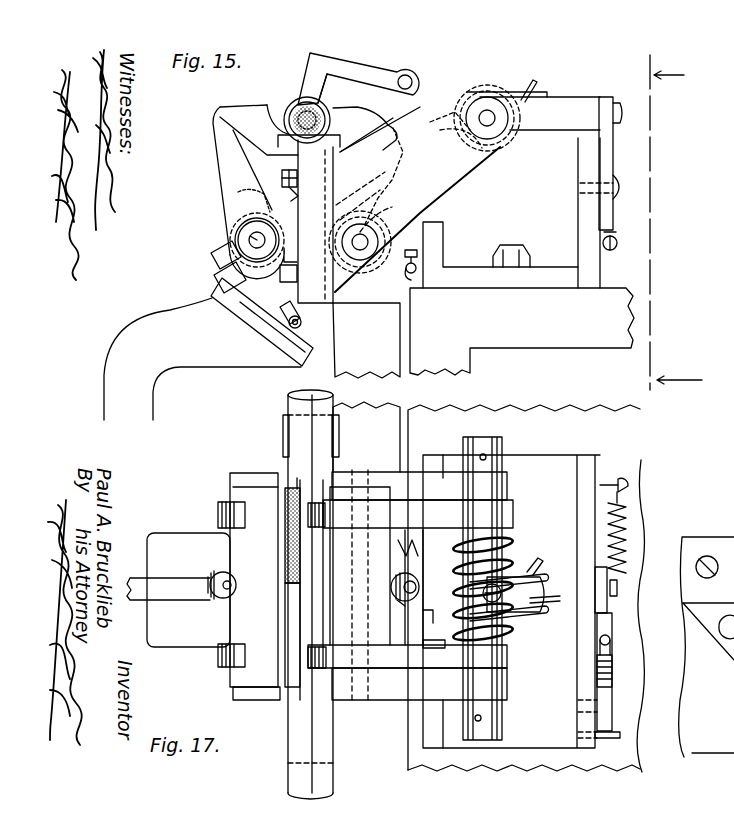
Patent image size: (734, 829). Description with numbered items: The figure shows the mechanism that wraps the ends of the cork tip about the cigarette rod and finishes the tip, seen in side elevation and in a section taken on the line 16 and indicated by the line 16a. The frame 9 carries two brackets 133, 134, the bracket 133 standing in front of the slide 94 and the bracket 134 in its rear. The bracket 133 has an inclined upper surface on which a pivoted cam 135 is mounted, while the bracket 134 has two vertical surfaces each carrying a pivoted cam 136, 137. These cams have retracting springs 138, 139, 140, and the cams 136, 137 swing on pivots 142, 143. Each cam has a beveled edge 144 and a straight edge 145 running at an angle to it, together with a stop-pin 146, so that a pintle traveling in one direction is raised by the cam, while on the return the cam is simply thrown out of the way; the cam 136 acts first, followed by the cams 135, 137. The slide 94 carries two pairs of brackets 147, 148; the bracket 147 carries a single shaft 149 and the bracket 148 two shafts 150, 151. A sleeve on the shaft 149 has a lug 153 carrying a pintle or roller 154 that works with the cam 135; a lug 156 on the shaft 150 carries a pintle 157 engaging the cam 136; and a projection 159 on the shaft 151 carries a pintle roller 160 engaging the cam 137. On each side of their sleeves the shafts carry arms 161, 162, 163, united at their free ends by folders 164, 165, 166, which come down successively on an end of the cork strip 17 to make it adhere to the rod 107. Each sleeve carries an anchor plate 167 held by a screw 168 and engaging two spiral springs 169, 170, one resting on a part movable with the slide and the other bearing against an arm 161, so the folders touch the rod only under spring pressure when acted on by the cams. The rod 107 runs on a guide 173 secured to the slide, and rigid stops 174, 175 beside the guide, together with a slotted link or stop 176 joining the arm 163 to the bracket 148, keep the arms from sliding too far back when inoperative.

In FIG. 15, the frame 9 is at (575, 328).
In FIG. 15, the section line 16— 16 is at (658, 223).
In FIG. 17, the section line 16a is at (410, 514).
In FIG. 17, the cork strip 17 is at (301, 470).
In FIG. 15, the slide 94 is at (366, 340).
In FIG. 17, the slide 94 is at (366, 437).
In FIG. 15, the cigarette rod 107 is at (295, 98).
In FIG. 17, the cigarette rod 107 is at (296, 432).
In FIG. 15, the bracket 133 is at (104, 411).
In FIG. 17, the bracket 133 is at (168, 610).
In FIG. 15, the bracket 134 is at (523, 290).
In FIG. 17, the bracket 134 is at (583, 505).
In FIG. 15, the pivoted cam 135 is at (256, 316).
In FIG. 15, the pivoted cam 136 is at (424, 237).
In FIG. 17, the pivoted cam 136 is at (431, 652).
In FIG. 15, the pivoted cam 137 is at (604, 166).
In FIG. 15, the retracting spring 138 is at (319, 227).
In FIG. 15, the retracting spring 139 is at (395, 285).
In FIG. 15, the retracting spring 140 is at (619, 245).
In FIG. 17, the retracting spring 140 is at (629, 528).
In FIG. 15, the pivot 142 is at (396, 269).
In FIG. 15, the pivot 143 is at (622, 188).
In FIG. 17, the pivot 143 is at (609, 716).
In FIG. 15, the beveled edge 144 is at (279, 296).
In FIG. 17, the beveled edge 144 is at (591, 671).
In FIG. 17, the straight edge 145 is at (432, 650).
In FIG. 17, the stop-pin 146 is at (606, 740).
In FIG. 15, the bracket 147 is at (249, 200).
In FIG. 15, the bracket 148 is at (368, 215).
In FIG. 17, the bracket 148 is at (435, 478).
In FIG. 15, the shaft 149 is at (234, 238).
In FIG. 15, the shaft 150 is at (360, 248).
In FIG. 17, the shaft 150 is at (363, 470).
In FIG. 15, the shaft 151 is at (490, 128).
In FIG. 17, the shaft 151 is at (486, 440).
In FIG. 15, the lug 153 is at (226, 273).
In FIG. 17, the lug 153 is at (231, 585).
In FIG. 15, the pintle or roller 154 is at (214, 288).
In FIG. 17, the pintle or roller 154 is at (213, 580).
In FIG. 17, the lug 156 is at (391, 587).
In FIG. 17, the pintle 157 is at (397, 605).
In FIG. 15, the projection 159 is at (553, 128).
In FIG. 17, the projection 159 is at (556, 605).
In FIG. 15, the pintle roller 160 is at (607, 97).
In FIG. 17, the pintle roller 160 is at (596, 578).
In FIG. 15, the arm 161 is at (228, 184).
In FIG. 17, the arm 161 is at (218, 515).
In FIG. 15, the arm 162 is at (452, 137).
In FIG. 15, the arm 163 is at (384, 70).
In FIG. 17, the arm 163 is at (407, 657).
In FIG. 15, the folder 164 is at (236, 107).
In FIG. 17, the folder 164 is at (255, 586).
In FIG. 15, the folder 165 is at (348, 108).
In FIG. 17, the folder 165 is at (360, 566).
In FIG. 15, the folder 166 is at (318, 88).
In FIG. 17, the folder 166 is at (312, 627).
In FIG. 15, the anchor plate 167 is at (516, 87).
In FIG. 17, the anchor plate 167 is at (528, 581).
In FIG. 17, the screw 168 is at (550, 597).
In FIG. 15, the spiral spring 169 is at (291, 190).
In FIG. 17, the spiral spring 169 is at (518, 628).
In FIG. 15, the spiral spring 170 is at (456, 112).
In FIG. 17, the spiral spring 170 is at (508, 549).
In FIG. 15, the guide 173 is at (279, 138).
In FIG. 15, the rigid stop 174 is at (238, 158).
In FIG. 15, the rigid stop 175 is at (369, 138).
In FIG. 15, the link or stop 176 is at (250, 243).